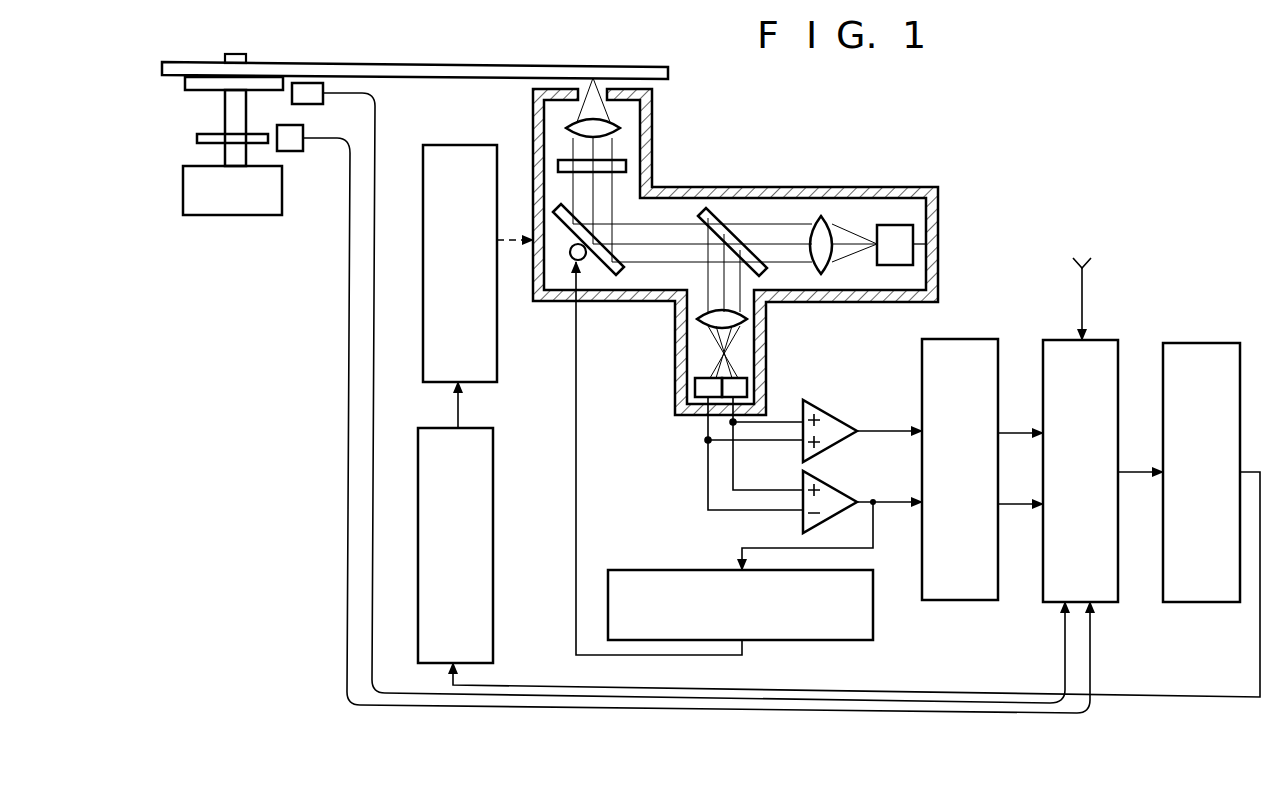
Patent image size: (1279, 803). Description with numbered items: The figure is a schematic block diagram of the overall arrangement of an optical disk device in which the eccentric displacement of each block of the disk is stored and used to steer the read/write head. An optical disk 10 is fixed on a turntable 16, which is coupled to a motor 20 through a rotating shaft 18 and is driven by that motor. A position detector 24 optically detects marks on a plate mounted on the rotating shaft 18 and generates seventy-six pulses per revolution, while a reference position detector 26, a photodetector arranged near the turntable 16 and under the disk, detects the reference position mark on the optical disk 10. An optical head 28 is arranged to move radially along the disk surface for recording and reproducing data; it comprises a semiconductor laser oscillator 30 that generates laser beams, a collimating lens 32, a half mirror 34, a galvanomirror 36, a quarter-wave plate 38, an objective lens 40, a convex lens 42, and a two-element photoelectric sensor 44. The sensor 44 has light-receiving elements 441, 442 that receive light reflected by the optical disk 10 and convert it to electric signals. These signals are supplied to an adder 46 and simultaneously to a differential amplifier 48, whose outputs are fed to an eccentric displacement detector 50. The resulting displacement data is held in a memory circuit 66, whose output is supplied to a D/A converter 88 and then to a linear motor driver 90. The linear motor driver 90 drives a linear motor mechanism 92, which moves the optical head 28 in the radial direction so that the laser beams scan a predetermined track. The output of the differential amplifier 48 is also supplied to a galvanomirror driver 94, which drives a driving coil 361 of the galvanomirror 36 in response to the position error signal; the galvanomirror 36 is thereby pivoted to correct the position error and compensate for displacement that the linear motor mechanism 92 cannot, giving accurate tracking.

The optical disk 10 is at (565, 66).
The turntable 16 is at (200, 90).
The rotating shaft 18 is at (224, 155).
The motor 20 is at (232, 216).
The position detector 24 is at (294, 151).
The reference position detector 26 is at (323, 100).
The optical head 28 is at (900, 186).
The semiconductor laser oscillator 30 is at (938, 245).
The collimating lens 32 is at (826, 216).
The half mirror 34 is at (712, 212).
The galvanomirror 36 is at (613, 274).
The driving coil 361 is at (572, 260).
The quarter-wave plate 38 is at (626, 166).
The objective lens 40 is at (620, 128).
The convex lens 42 is at (747, 319).
The two-element photoelectric sensor 44 is at (716, 372).
The light-receiving element 441 is at (747, 390).
The light-receiving element 442 is at (695, 388).
The adder 46 is at (847, 424).
The differential amplifier 48 is at (847, 496).
The eccentric displacement detector 50 is at (975, 339).
The memory circuit 66 is at (1105, 340).
The D/A converter 88 is at (1205, 342).
The linear motor driver 90 is at (493, 528).
The linear motor mechanism 92 is at (497, 366).
The galvanomirror driver 94 is at (873, 628).